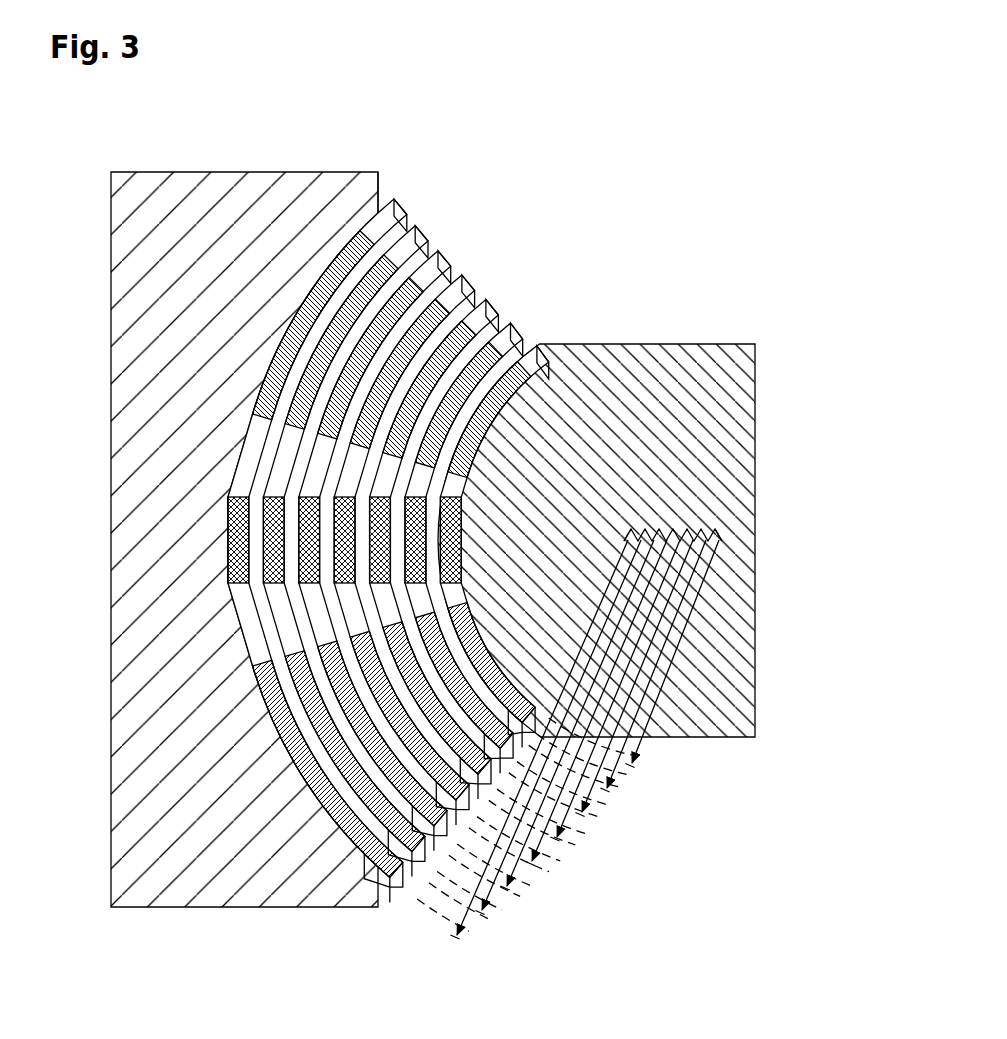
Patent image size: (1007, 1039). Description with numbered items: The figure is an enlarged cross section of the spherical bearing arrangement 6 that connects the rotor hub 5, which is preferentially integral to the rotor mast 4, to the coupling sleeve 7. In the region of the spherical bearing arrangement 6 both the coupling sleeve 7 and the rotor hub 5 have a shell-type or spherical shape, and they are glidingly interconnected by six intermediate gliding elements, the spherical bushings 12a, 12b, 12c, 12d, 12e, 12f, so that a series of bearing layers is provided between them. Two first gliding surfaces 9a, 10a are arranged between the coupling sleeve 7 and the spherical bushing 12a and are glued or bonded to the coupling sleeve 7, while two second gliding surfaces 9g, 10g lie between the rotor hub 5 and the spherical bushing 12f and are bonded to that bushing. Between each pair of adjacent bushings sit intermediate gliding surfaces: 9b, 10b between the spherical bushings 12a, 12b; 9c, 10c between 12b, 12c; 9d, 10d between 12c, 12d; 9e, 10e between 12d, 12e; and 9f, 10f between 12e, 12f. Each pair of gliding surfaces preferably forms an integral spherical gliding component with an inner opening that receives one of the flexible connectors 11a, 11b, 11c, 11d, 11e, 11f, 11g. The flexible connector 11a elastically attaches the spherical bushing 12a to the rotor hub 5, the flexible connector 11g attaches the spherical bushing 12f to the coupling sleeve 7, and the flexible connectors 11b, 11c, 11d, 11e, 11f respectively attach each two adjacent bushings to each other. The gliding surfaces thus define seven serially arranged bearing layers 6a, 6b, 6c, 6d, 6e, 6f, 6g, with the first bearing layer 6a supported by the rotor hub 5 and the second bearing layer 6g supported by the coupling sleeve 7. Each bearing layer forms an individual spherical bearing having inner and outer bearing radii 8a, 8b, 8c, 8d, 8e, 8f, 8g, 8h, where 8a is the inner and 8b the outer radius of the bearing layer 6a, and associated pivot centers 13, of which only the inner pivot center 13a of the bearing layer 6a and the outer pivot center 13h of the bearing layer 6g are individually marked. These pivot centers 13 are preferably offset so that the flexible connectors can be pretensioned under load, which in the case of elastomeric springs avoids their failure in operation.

The rotor mast 4 is at (710, 380).
The rotor hub 5 is at (652, 540).
The spherical bearing arrangement 6 is at (438, 519).
The first bearing layer 6a is at (640, 403).
The bearing layer 6b is at (511, 321).
The bearing layer 6c is at (486, 297).
The bearing layer 6d is at (317, 429).
The bearing layer 6e is at (279, 455).
The bearing layer 6f is at (256, 468).
The second bearing layer 6g is at (336, 480).
The coupling sleeve 7 is at (235, 196).
The inner bearing radius 8a is at (693, 598).
The outer bearing radius 8b is at (672, 615).
The bearing radius 8c is at (648, 640).
The bearing radius 8d is at (624, 665).
The bearing radius 8e is at (600, 690).
The bearing radius 8f is at (577, 715).
The bearing radius 8g is at (553, 740).
The bearing radius 8h is at (460, 940).
The first gliding surface 9a is at (462, 478).
The intermediate gliding surface 9b is at (432, 465).
The intermediate gliding surface 9c is at (395, 465).
The intermediate gliding surface 9d is at (398, 345).
The intermediate gliding surface 9e is at (355, 362).
The intermediate gliding surface 9f is at (305, 383).
The second gliding surface 9g is at (256, 415).
The first gliding surface 10a is at (460, 610).
The intermediate gliding surface 10b is at (425, 622).
The intermediate gliding surface 10c is at (405, 640).
The intermediate gliding surface 10d is at (370, 645).
The intermediate gliding surface 10e is at (332, 650).
The intermediate gliding surface 10f is at (295, 660).
The second gliding surface 10g is at (258, 676).
The flexible connector 11a is at (455, 515).
The flexible connector 11b is at (420, 533).
The flexible connector 11c is at (385, 550).
The flexible connector 11d is at (350, 565).
The flexible connector 11e is at (304, 585).
The flexible connector 11f is at (280, 575).
The flexible connector 11g is at (228, 500).
The spherical bushing 12a is at (540, 352).
The spherical bushing 12b is at (442, 265).
The spherical bushing 12c is at (418, 238).
The spherical bushing 12d is at (388, 232).
The spherical bushing 12e is at (300, 222).
The spherical bushing 12f is at (375, 194).
The pivot centers 13 is at (703, 523).
The inner pivot center 13a is at (729, 553).
The outer pivot center 13h is at (645, 519).